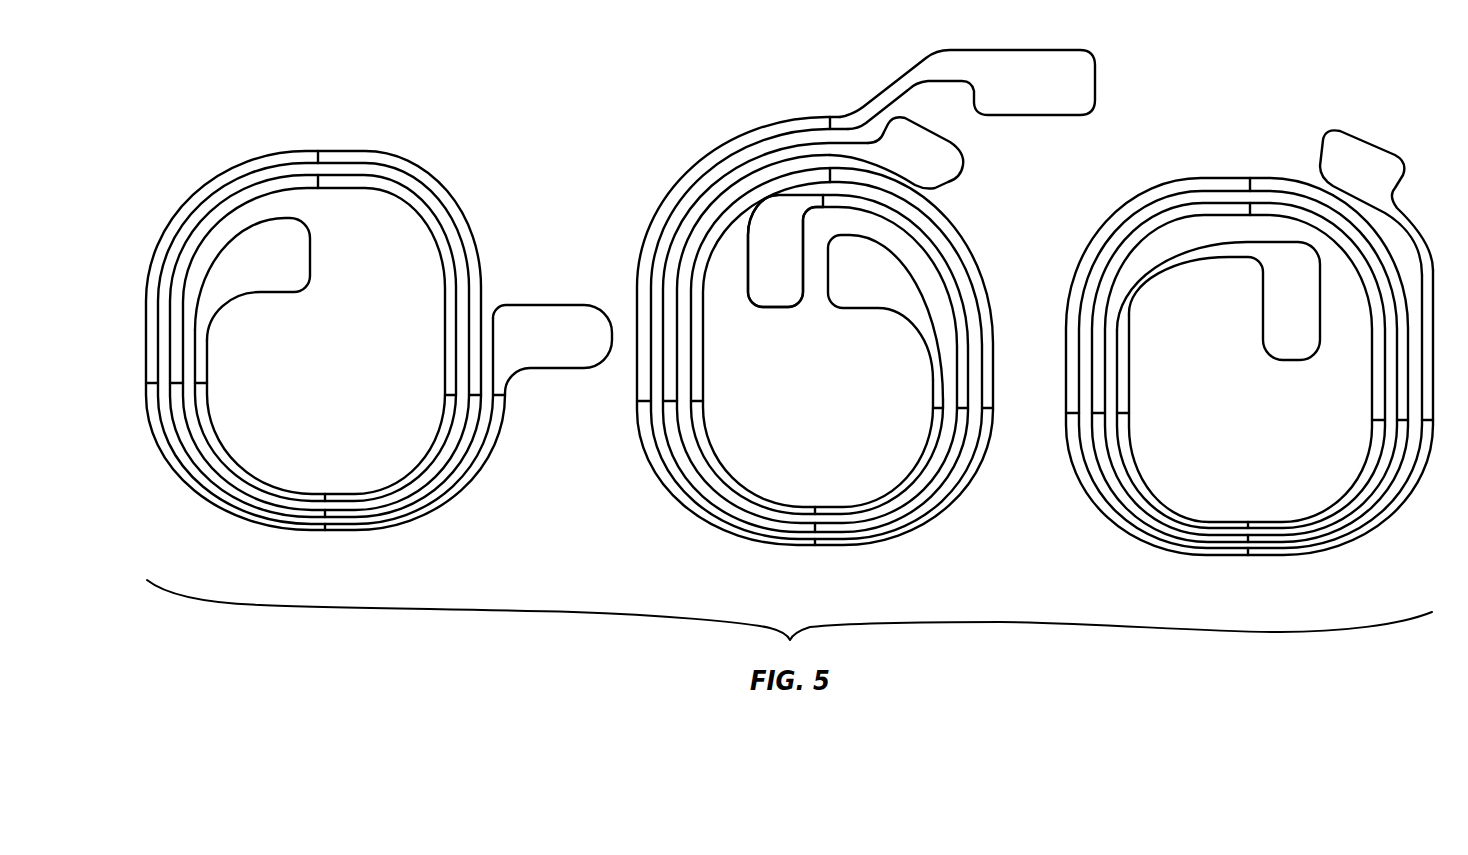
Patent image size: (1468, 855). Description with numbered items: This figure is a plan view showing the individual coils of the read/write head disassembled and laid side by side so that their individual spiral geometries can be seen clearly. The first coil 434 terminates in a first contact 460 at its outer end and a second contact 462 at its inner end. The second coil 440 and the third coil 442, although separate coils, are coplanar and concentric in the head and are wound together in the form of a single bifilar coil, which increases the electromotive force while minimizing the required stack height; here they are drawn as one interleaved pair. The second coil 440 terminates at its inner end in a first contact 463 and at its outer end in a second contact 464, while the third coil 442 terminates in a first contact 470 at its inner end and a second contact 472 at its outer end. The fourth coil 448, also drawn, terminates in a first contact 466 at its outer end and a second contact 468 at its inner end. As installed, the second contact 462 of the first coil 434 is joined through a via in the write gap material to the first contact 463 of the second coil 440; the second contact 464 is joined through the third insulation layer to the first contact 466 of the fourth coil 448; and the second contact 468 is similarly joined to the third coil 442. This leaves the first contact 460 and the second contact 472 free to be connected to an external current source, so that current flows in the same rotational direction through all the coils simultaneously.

The first coil 434 is at (277, 160).
The first contact 460 is at (527, 347).
The second contact 462 is at (302, 268).
The second coil 440 is at (710, 198).
The third coil 442 is at (731, 148).
The first contact 463 is at (790, 297).
The first contact 470 is at (886, 293).
The second contact 464 is at (942, 172).
The second contact 472 is at (1057, 55).
The third inductor coil 448 is at (1180, 188).
The first contact 466 is at (1382, 160).
The second contact 468 is at (1263, 318).